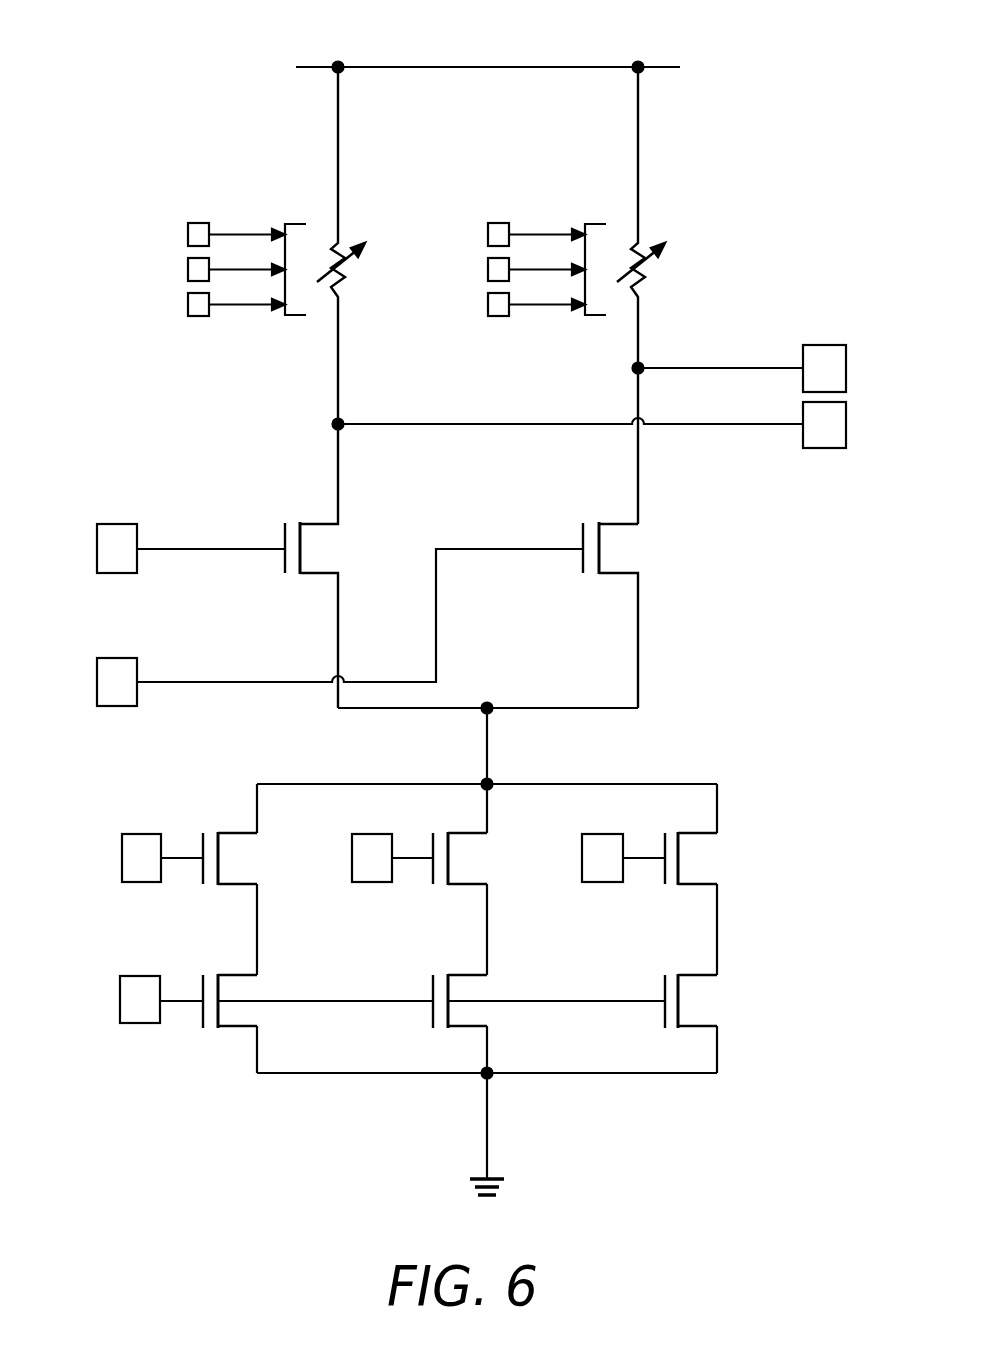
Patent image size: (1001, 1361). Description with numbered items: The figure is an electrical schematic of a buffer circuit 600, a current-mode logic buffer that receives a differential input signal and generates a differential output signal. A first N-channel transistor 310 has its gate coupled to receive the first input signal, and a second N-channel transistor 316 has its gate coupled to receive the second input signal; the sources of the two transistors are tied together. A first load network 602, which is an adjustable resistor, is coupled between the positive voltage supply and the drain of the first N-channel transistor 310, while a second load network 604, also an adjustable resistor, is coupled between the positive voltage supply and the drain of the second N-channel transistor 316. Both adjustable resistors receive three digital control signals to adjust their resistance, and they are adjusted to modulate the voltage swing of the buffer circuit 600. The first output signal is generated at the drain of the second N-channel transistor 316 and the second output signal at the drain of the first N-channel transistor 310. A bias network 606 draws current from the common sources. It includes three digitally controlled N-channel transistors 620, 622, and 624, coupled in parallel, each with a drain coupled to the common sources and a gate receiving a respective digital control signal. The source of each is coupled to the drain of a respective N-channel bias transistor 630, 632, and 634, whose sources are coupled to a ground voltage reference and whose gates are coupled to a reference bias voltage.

The buffer circuit 600 is at (155, 47).
The first load network 602 is at (350, 278).
The second load network 604 is at (650, 278).
The first N-channel transistor 310 is at (302, 549).
The second N-channel transistor 316 is at (601, 549).
The bias network 606 is at (790, 885).
The digitally controlled N-channel transistor 620 is at (220, 858).
The digitally controlled N-channel transistor 622 is at (450, 858).
The digitally controlled N-channel transistor 624 is at (680, 858).
The N-channel bias transistor 630 is at (265, 1006).
The N-channel bias transistor 632 is at (495, 1006).
The N-channel bias transistor 634 is at (680, 1001).